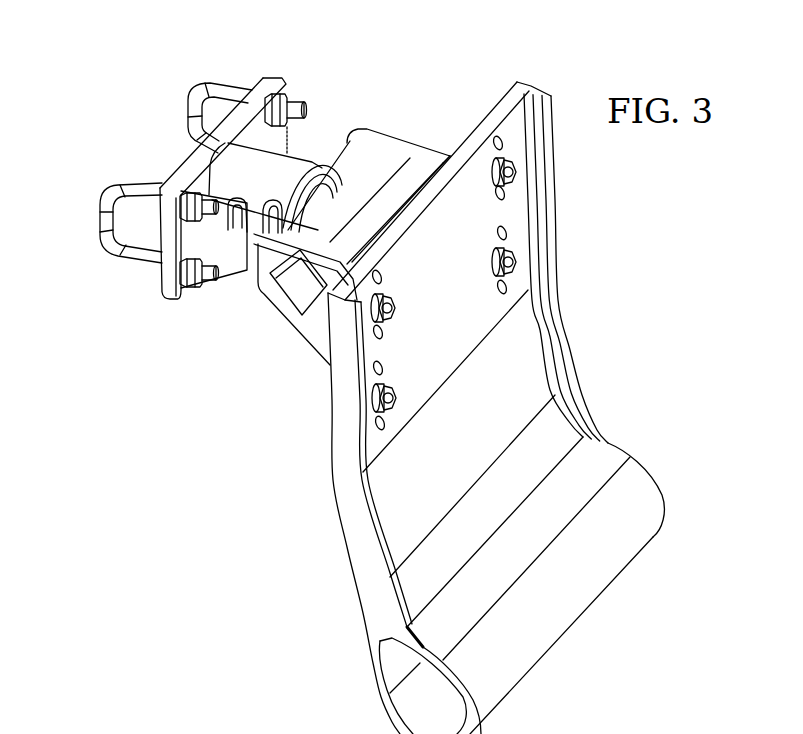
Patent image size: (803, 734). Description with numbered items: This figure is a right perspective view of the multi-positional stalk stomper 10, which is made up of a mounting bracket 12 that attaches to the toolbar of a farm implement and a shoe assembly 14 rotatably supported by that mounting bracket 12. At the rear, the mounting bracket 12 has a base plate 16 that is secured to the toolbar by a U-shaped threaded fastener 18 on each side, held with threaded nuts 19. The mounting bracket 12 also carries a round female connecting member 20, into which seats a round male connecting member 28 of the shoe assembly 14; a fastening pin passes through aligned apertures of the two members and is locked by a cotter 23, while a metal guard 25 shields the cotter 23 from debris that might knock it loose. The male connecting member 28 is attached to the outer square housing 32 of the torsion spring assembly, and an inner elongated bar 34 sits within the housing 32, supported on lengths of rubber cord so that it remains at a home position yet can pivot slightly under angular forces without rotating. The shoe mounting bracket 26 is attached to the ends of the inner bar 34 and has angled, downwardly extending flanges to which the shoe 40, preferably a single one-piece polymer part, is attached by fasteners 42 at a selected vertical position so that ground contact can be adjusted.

The multi-positional stalk stomper 10 is at (256, 441).
The mounting bracket 12 is at (266, 66).
The shoe assembly 14 is at (560, 218).
The base plate 16 is at (168, 300).
The U-shaped threaded fastener 18 is at (200, 80).
The threaded nut 19 is at (283, 100).
The female connecting member 20 is at (237, 157).
The cotter 23 is at (233, 197).
The metal guard 25 is at (230, 270).
The shoe mounting bracket 26 is at (411, 125).
The male connecting member 28 is at (320, 162).
The outer square housing 32 is at (382, 143).
The inner elongated bar 34 is at (293, 293).
The shoe 40 is at (588, 418).
The fastener 42 is at (518, 163).